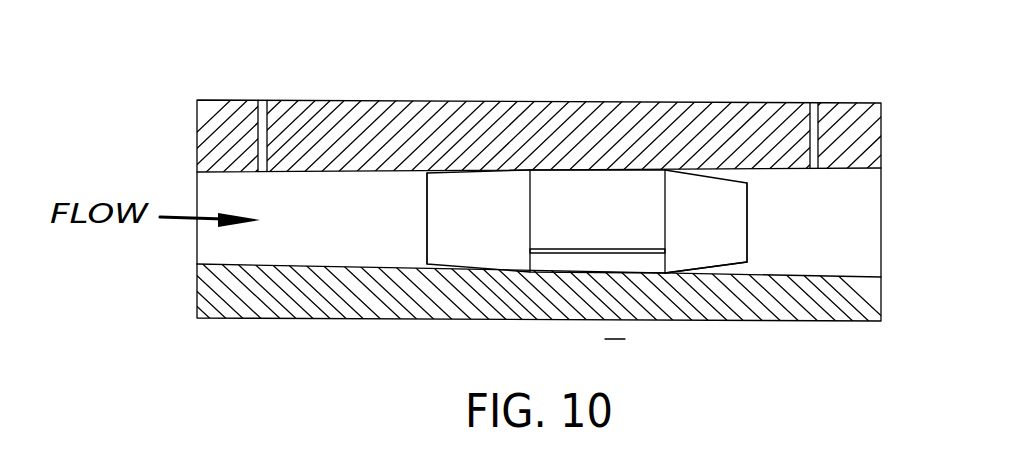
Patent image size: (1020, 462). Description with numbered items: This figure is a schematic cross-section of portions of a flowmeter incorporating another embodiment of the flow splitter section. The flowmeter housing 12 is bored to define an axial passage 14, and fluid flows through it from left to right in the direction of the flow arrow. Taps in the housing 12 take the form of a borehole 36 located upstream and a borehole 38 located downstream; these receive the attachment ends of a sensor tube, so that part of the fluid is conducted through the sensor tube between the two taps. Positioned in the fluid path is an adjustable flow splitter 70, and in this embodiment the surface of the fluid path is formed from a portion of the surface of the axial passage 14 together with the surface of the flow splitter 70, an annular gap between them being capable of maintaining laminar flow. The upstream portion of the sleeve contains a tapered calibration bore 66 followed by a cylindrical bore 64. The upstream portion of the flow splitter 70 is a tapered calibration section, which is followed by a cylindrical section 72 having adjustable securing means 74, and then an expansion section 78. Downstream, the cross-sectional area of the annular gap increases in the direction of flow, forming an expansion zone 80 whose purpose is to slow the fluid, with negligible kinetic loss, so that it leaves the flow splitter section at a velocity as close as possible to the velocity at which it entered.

The housing 12 is at (778, 313).
The axial passage 14 is at (380, 232).
The borehole 36 is at (262, 135).
The borehole 38 is at (810, 133).
The cylindrical bore 64 is at (620, 150).
The calibration bore 66 is at (477, 265).
The flow splitter 70 is at (566, 192).
The cylindrical section 72 is at (642, 208).
The adjustable securing means 74 is at (558, 254).
The expansion section 78 is at (687, 242).
The expansion zone 80 is at (738, 270).